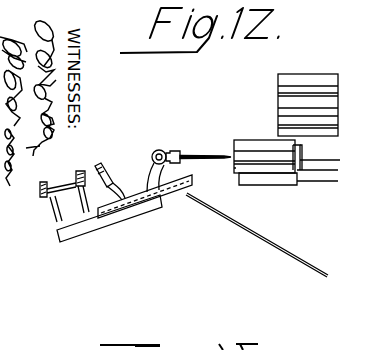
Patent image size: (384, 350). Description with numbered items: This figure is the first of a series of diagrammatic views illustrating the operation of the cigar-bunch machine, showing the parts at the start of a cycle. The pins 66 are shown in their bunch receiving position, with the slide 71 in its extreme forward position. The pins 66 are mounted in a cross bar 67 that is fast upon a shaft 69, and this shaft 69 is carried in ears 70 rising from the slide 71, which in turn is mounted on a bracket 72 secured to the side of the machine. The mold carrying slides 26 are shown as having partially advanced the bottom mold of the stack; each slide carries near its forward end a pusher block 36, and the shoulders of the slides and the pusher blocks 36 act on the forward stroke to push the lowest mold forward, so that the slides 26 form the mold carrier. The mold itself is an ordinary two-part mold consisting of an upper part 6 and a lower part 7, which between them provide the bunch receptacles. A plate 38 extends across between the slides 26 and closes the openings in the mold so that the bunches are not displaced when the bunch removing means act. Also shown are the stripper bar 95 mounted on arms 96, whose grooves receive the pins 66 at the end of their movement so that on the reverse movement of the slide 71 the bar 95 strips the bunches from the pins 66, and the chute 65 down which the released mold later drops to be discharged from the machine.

The upper part of the mold 6 is at (250, 147).
The lower part of the mold 7 is at (235, 169).
The slides 26 is at (315, 177).
The pusher blocks 36 is at (301, 152).
The plate 38 is at (290, 167).
The chute 65 is at (308, 258).
The pins 66 is at (218, 153).
The cross bar 67 is at (178, 150).
The shaft 69 is at (160, 150).
The ears 70 is at (148, 180).
The slide 71 is at (122, 212).
The bracket 72 is at (103, 232).
The stripper bar 95 is at (98, 165).
The arms 96 is at (105, 175).